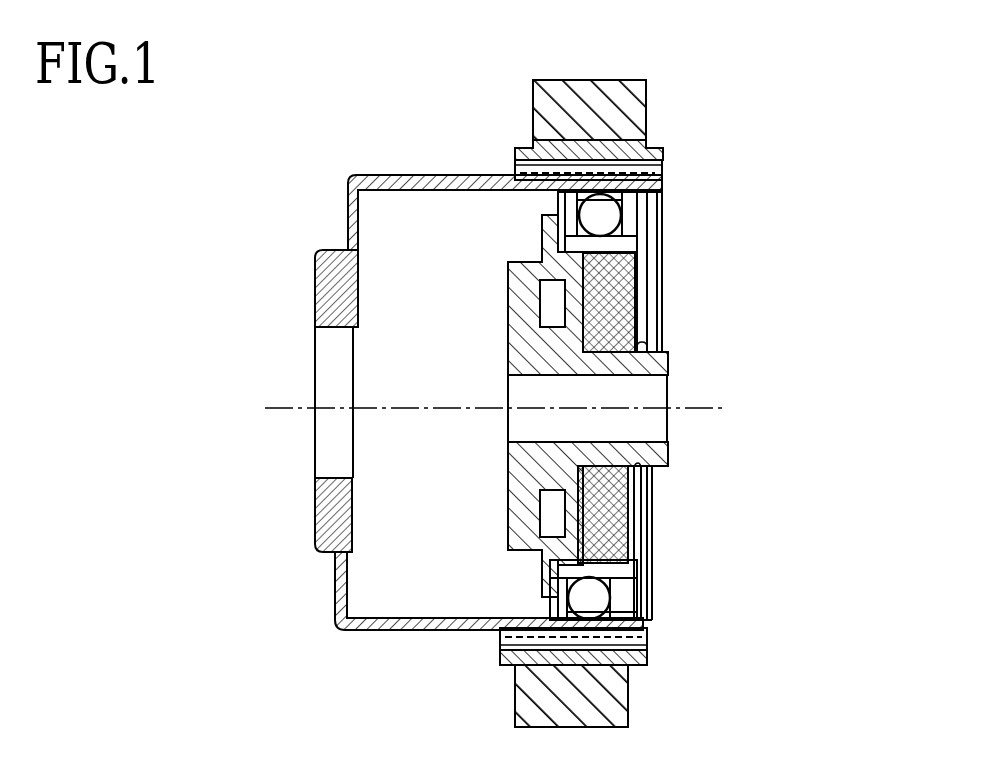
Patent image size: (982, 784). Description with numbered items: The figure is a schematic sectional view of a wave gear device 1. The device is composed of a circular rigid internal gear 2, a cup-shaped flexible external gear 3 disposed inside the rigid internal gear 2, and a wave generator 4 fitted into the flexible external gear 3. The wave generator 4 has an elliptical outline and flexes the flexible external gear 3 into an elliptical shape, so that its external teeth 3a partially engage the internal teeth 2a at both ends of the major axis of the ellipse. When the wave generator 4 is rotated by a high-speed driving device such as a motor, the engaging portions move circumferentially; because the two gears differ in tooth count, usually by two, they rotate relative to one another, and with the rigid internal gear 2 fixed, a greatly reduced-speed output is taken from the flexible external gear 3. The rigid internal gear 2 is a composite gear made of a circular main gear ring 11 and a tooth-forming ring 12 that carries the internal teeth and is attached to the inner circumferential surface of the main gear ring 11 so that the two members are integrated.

The wave gear device 1 is at (803, 210).
The rigid internal gear 2 is at (743, 62).
The internal teeth 2a is at (543, 192).
The flexible external gear 3 is at (255, 357).
The external teeth 3a is at (640, 192).
The wave generator 4 is at (635, 522).
The main gear ring 11 is at (647, 113).
The tooth-forming ring 12 is at (648, 147).